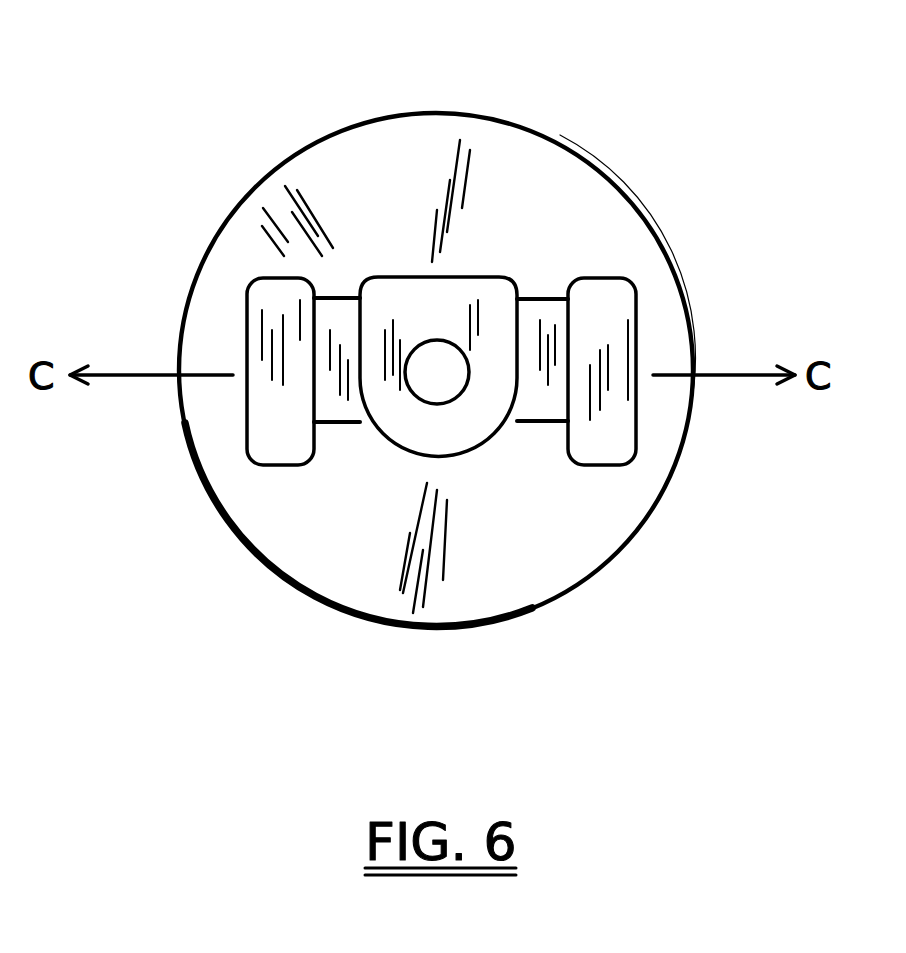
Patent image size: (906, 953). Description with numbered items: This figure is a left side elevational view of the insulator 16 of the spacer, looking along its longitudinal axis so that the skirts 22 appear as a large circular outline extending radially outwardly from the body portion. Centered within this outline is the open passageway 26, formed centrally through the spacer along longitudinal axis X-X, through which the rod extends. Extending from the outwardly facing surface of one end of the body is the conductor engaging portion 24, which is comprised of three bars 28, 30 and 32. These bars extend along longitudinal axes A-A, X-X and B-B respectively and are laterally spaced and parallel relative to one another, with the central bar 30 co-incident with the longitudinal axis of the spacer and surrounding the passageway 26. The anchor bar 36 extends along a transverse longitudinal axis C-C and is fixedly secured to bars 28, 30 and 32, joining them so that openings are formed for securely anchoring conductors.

The insulator 16 is at (280, 642).
The skirt 22 is at (605, 513).
The conductor engaging portion 24 is at (532, 193).
The open passageway 26 is at (445, 376).
The bar 28 is at (603, 297).
The bar 30 is at (403, 300).
The bar 32 is at (262, 432).
The anchor bar 36 is at (348, 402).